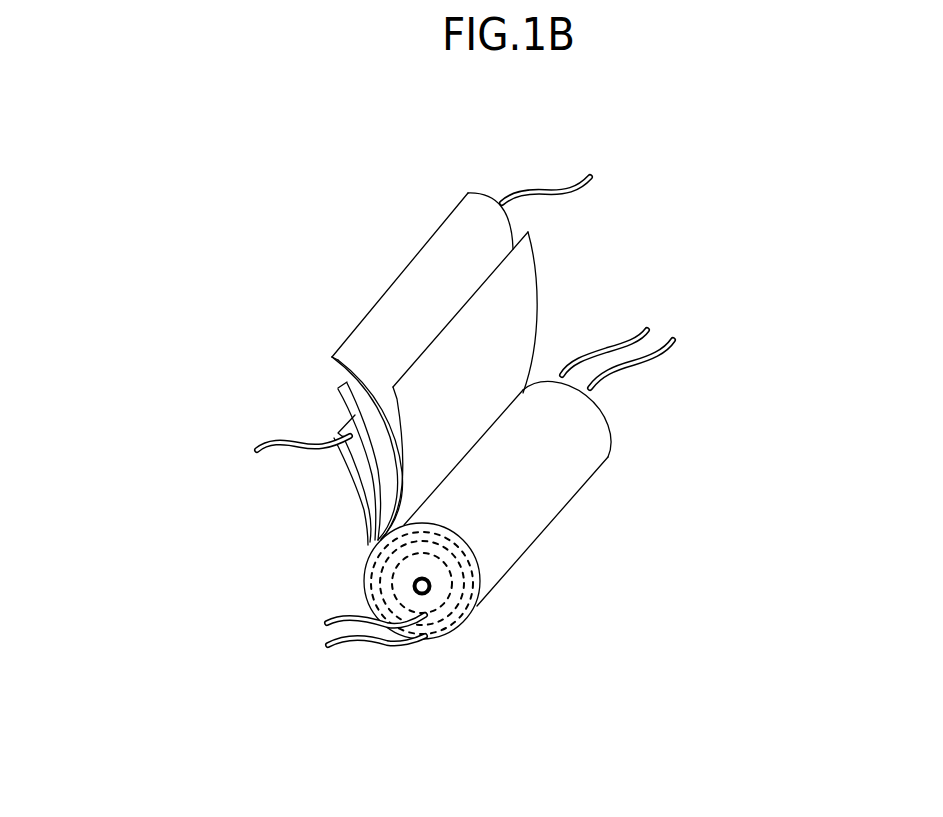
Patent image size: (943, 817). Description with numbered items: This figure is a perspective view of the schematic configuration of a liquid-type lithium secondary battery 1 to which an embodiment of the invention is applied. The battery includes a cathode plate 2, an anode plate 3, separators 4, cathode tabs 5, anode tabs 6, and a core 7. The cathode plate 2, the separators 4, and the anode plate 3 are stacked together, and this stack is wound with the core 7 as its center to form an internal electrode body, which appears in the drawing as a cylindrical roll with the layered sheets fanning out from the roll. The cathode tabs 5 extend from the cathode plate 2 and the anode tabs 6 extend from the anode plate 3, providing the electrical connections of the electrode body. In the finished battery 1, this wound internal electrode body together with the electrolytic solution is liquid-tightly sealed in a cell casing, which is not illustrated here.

The lithium secondary battery 1 is at (565, 525).
The cathode plate 2 is at (376, 475).
The anode plate 3 is at (410, 288).
The separators 4 is at (338, 388).
The cathode tabs 5 is at (272, 442).
The anode tabs 6 is at (547, 197).
The core 7 is at (430, 595).